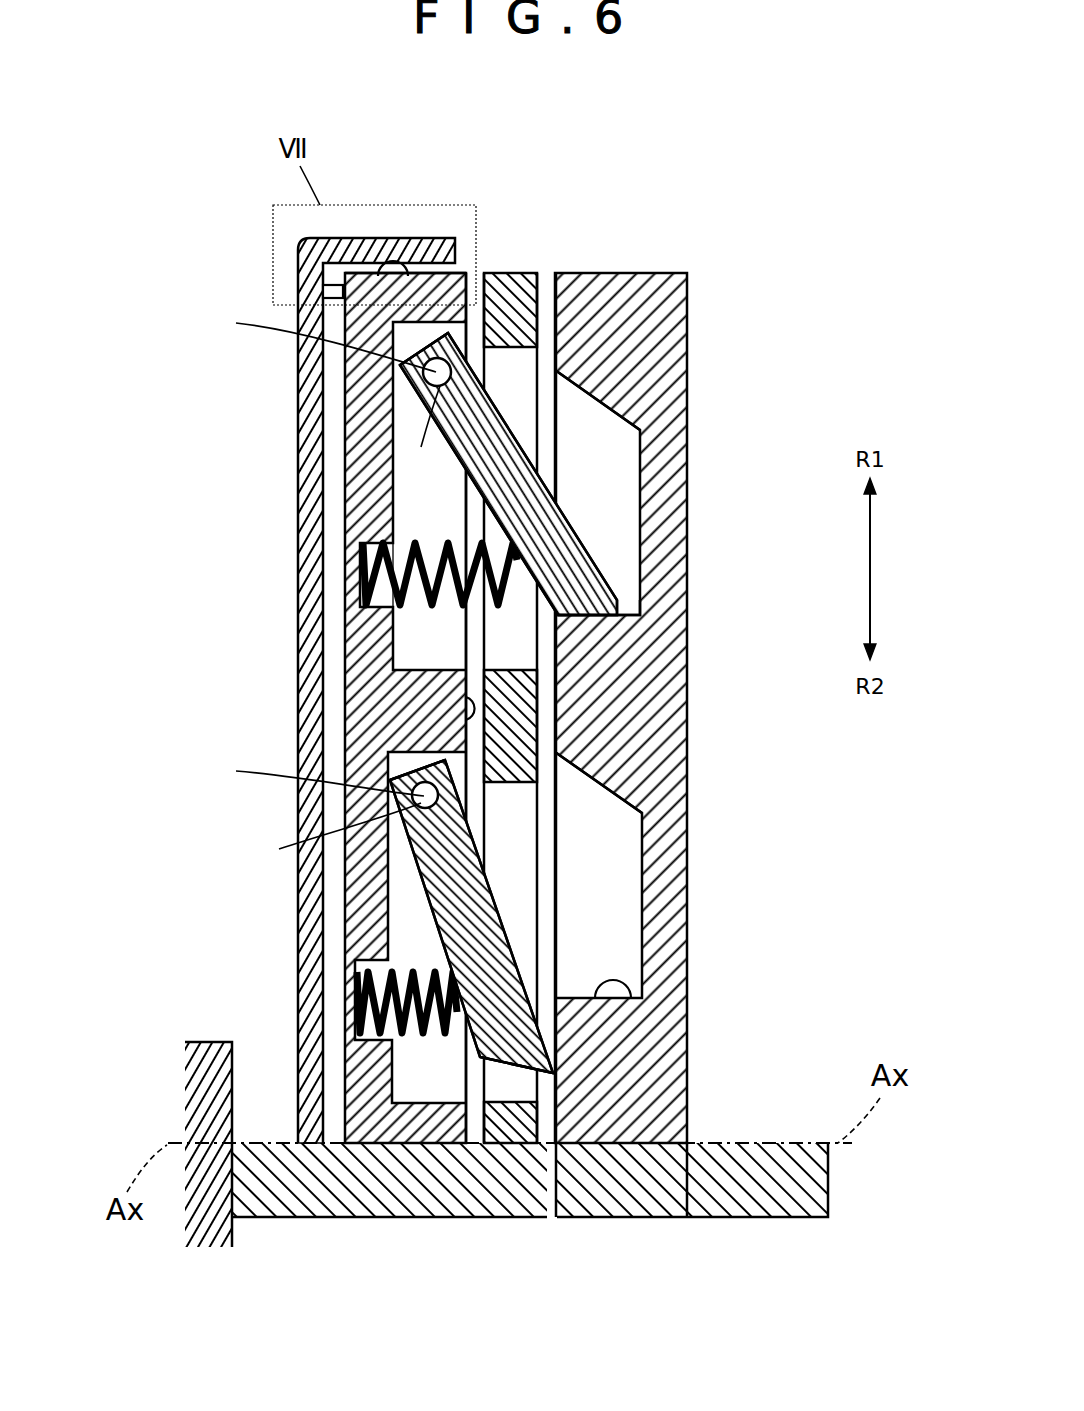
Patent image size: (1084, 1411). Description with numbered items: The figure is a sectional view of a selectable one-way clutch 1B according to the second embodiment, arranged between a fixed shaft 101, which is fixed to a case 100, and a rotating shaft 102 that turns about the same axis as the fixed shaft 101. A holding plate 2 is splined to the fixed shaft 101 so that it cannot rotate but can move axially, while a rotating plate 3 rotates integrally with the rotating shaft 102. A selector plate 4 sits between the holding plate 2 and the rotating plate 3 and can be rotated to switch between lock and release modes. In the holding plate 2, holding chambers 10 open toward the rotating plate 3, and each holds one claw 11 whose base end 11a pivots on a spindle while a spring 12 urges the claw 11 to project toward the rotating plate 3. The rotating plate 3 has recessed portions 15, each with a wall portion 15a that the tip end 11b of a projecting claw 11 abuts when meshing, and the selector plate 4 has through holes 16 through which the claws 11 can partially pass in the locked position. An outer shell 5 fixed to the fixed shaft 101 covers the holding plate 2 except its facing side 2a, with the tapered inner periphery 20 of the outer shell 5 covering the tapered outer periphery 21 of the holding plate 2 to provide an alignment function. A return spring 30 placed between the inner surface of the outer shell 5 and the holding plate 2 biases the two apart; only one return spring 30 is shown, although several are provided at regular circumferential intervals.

The clutch 1B is at (692, 194).
The holding plate 2 is at (358, 437).
The facing side 2a is at (478, 707).
The rotating plate 3 is at (687, 403).
The selector plate 4 is at (522, 273).
The outer shell 5 is at (300, 383).
The holding chamber 10 is at (408, 492).
The claw 11 is at (520, 481).
The base end 11a is at (458, 352).
The tip end 11b is at (600, 617).
The spring 12 is at (420, 590).
The recessed portion 15 is at (615, 505).
The wall portion 15a is at (640, 605).
The through hole 16 is at (593, 387).
The inner periphery 20 is at (392, 276).
The outer periphery 21 is at (447, 272).
The return spring 30 is at (322, 284).
The case 100 is at (232, 1062).
The fixed shaft 101 is at (417, 1189).
The rotating shaft 102 is at (768, 1198).